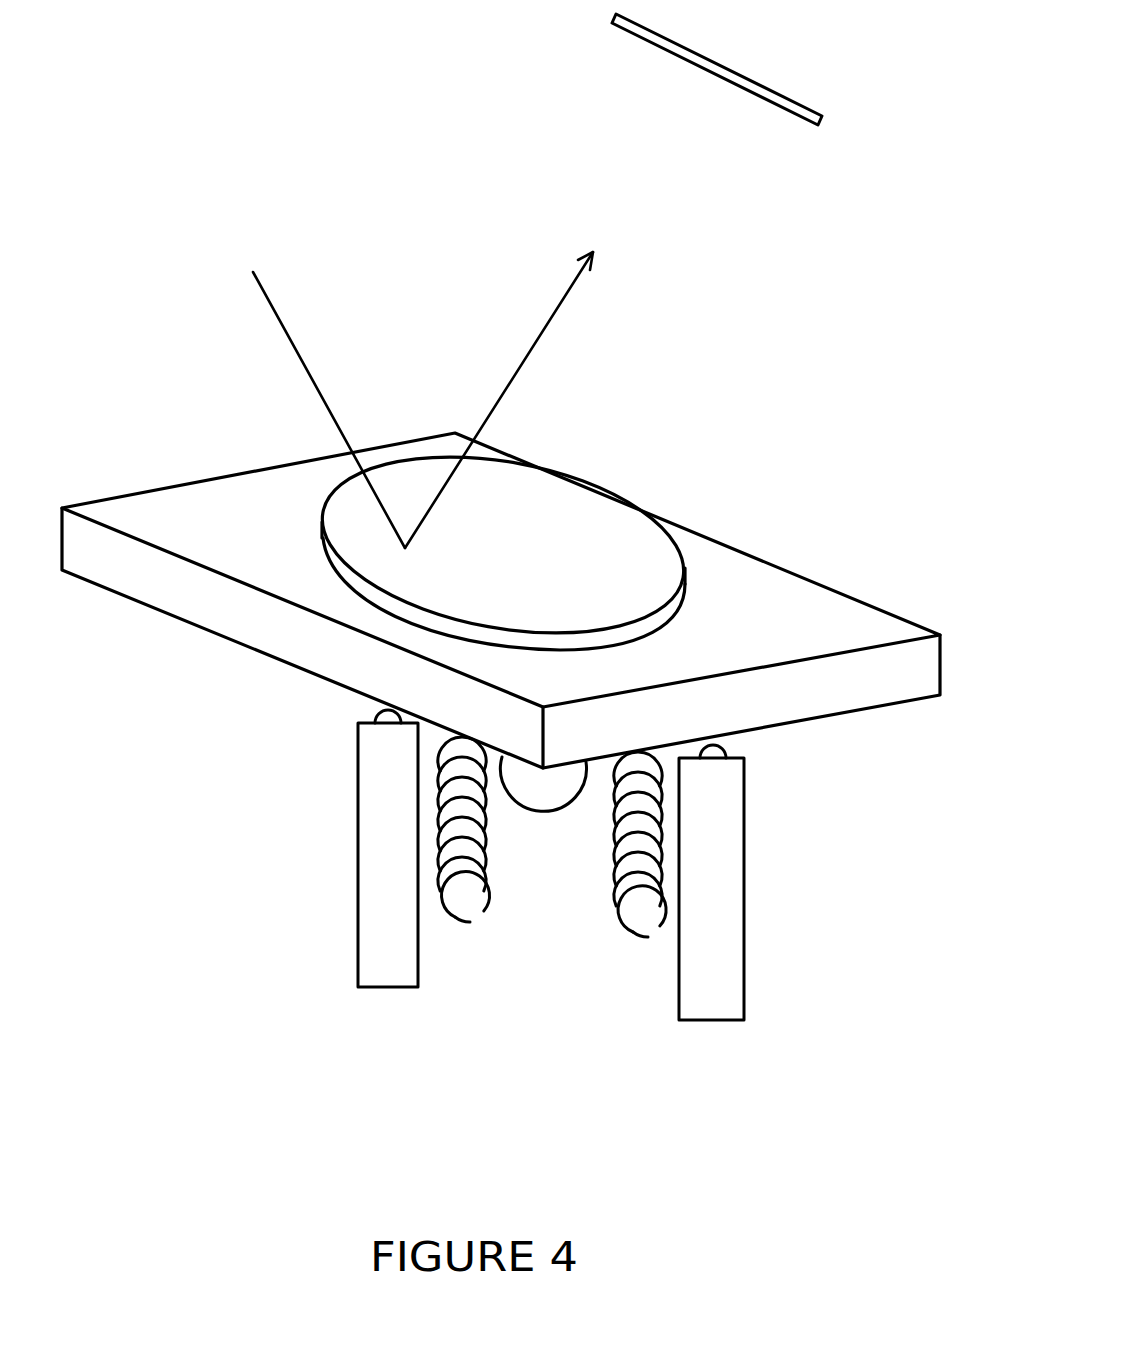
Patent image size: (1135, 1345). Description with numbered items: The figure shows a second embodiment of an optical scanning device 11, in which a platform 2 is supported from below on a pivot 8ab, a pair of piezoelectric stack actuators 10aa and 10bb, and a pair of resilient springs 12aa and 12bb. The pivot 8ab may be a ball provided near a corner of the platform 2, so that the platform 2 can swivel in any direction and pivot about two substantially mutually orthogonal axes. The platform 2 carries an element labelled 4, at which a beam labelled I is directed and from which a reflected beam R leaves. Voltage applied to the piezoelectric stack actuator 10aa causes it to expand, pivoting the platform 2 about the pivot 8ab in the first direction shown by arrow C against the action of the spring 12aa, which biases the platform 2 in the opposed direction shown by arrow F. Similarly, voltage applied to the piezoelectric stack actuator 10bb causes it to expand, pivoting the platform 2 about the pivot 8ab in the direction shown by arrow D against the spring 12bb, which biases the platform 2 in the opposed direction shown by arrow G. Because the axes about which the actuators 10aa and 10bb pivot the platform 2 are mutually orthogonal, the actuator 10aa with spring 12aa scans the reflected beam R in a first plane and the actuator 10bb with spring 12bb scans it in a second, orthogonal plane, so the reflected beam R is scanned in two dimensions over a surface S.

The platform 2 is at (812, 607).
The disc / sample (reflective element) 4 is at (605, 520).
The pivot 8ab is at (546, 820).
The piezoelectric stack actuator 10aa is at (735, 893).
The piezoelectric stack actuator 10bb is at (366, 952).
The resilient spring 12aa is at (638, 935).
The resilient spring 12bb is at (465, 918).
The optical scanning device 11 is at (380, 350).
The surface S is at (780, 146).
The incident ray I is at (328, 410).
The reflected beam R is at (502, 400).
The arrow F is at (214, 473).
The arrow D is at (266, 674).
The arrow G is at (763, 553).
The arrow C is at (827, 730).